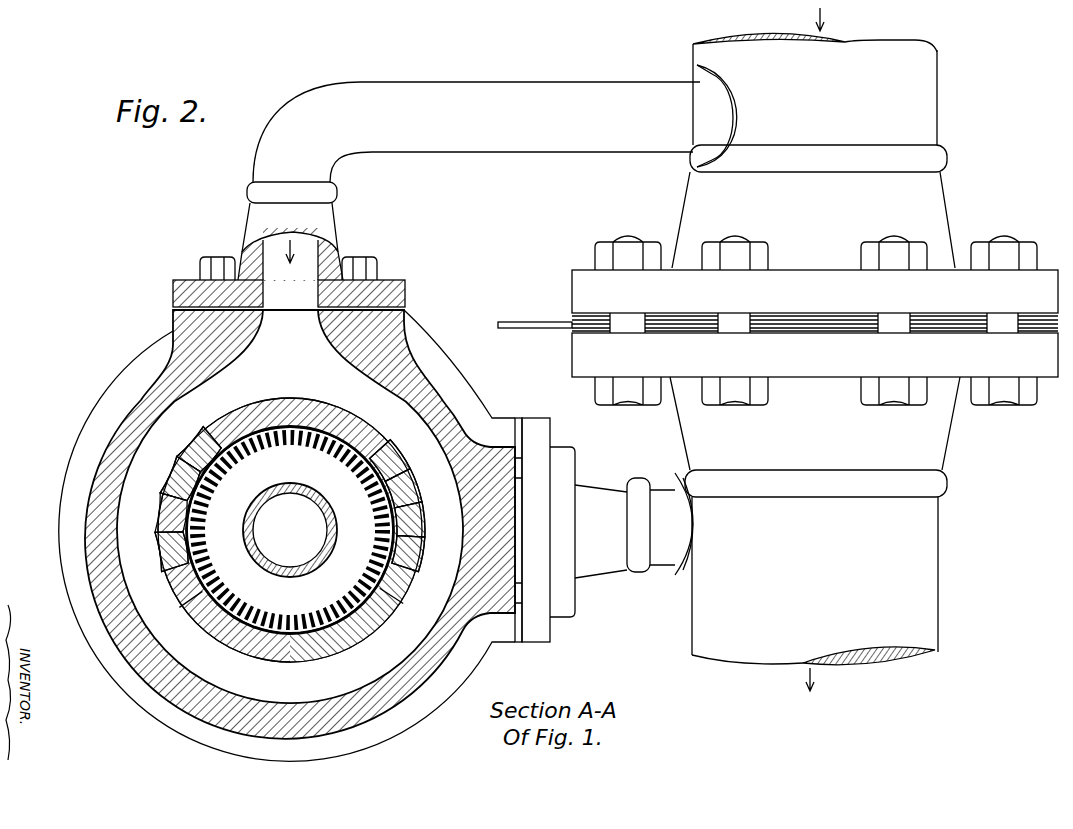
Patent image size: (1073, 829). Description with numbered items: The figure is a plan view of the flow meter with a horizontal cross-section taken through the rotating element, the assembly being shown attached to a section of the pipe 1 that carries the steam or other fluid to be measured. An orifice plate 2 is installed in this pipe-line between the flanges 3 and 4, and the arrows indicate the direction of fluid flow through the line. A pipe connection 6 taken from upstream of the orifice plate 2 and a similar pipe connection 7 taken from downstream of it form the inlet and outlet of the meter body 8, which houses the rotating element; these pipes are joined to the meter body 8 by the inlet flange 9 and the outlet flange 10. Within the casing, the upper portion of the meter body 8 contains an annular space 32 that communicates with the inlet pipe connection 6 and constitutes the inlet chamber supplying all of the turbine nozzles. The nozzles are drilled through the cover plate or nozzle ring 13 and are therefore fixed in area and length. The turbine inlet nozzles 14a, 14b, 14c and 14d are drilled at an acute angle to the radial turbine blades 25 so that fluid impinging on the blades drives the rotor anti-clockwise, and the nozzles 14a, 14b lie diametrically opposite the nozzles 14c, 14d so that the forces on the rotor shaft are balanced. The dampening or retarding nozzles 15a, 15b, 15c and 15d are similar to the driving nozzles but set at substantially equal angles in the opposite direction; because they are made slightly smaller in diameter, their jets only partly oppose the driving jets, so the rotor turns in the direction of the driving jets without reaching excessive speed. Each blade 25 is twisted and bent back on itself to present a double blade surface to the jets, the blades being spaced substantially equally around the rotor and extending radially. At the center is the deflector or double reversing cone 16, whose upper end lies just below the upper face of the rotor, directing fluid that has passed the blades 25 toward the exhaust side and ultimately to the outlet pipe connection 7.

The pipe 1 is at (945, 113).
The orifice plate 2 is at (542, 323).
The flange 3 is at (572, 272).
The flange 4 is at (572, 350).
The pipe connection 6 is at (608, 88).
The pipe connection 7 is at (664, 570).
The meter body 8 is at (142, 393).
The inlet flange 9 is at (405, 283).
The outlet flange 10 is at (553, 627).
The nozzle ring 13 is at (285, 543).
The turbine inlet nozzle 14a is at (178, 477).
The turbine inlet nozzle 14b is at (202, 445).
The turbine inlet nozzle 14c is at (392, 612).
The turbine inlet nozzle 14d is at (416, 585).
The retarding nozzle 15a is at (163, 555).
The retarding nozzle 15b is at (176, 588).
The retarding nozzle 15c is at (424, 504).
The retarding nozzle 15d is at (414, 467).
The deflector 16 is at (246, 551).
The blades 25 is at (300, 450).
The annular space 32 is at (128, 487).